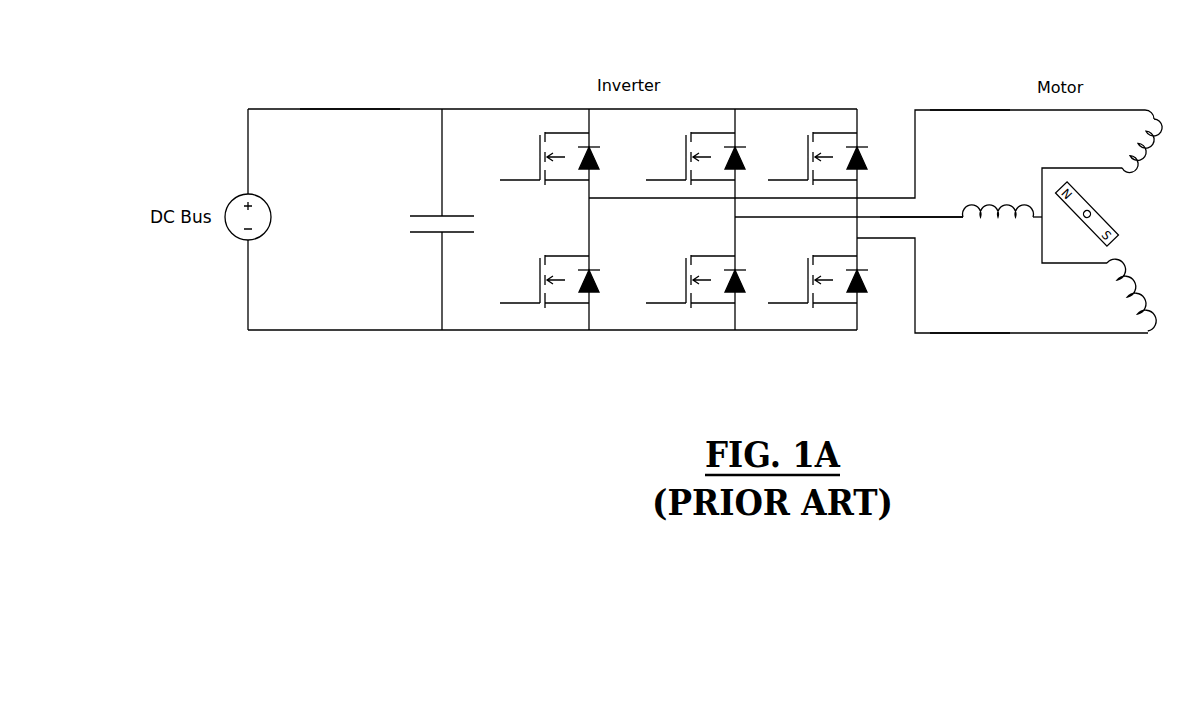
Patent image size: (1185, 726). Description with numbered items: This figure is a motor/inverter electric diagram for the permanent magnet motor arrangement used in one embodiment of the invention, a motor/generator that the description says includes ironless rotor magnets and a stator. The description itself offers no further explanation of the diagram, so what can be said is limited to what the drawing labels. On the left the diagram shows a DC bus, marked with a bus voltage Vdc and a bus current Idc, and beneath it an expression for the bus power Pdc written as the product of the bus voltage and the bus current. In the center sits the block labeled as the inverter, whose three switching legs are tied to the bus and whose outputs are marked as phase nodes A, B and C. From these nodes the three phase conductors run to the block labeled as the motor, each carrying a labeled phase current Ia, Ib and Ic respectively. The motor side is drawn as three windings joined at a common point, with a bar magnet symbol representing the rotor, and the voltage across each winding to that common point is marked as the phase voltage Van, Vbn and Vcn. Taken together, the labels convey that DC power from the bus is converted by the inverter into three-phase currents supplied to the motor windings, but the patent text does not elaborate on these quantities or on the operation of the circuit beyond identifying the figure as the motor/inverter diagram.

The inverter phase leg A is at (827, 219).
The inverter phase leg B is at (804, 219).
The inverter phase leg C is at (958, 221).
The DC bus voltage source Vdc is at (301, 131).
The DC bus current Idc is at (370, 103).
The DC bus power Pdc is at (317, 375).
The phase A current Ia is at (992, 103).
The phase B current Ib is at (950, 214).
The phase C current Ic is at (992, 326).
The phase A winding voltage Van is at (1090, 127).
The phase B winding voltage Vbn is at (1030, 230).
The phase C winding voltage Vcn is at (1080, 270).